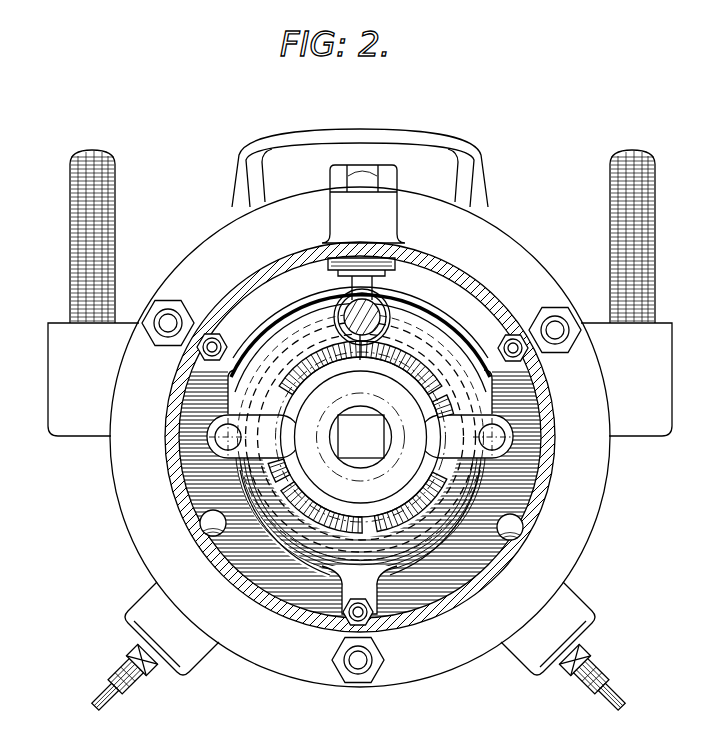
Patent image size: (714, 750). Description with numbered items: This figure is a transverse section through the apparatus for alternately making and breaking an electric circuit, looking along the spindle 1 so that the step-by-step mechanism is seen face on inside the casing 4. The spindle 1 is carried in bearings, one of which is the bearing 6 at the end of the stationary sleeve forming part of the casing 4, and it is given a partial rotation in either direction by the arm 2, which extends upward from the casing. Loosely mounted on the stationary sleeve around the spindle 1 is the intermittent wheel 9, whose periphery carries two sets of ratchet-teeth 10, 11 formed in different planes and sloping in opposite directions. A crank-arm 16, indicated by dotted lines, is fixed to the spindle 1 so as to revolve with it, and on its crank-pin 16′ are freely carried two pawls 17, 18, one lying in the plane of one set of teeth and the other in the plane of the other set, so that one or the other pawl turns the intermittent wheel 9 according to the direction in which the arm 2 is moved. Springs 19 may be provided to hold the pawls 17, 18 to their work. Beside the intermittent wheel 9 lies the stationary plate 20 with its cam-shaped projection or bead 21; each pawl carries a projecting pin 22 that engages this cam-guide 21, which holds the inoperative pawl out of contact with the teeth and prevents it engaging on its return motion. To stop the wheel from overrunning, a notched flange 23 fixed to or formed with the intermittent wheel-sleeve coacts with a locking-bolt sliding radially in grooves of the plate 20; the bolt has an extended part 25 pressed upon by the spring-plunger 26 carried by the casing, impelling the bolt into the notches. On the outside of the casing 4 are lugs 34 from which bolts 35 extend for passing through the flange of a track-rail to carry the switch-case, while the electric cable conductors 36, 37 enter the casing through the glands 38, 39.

The spindle 1 is at (366, 408).
The arm 2 is at (416, 150).
The casing 4 is at (503, 560).
The bearing 6 is at (537, 493).
The intermittent wheel 9 is at (267, 537).
The ratchet-teeth 10 is at (430, 387).
The ratchet-teeth 11 is at (393, 337).
The crank-arm 16 is at (331, 397).
The crank-pin 16′ is at (347, 310).
The pawl 17 is at (302, 358).
The pawl 18 is at (433, 353).
The spring 19 is at (307, 320).
The stationary plate 20 is at (235, 320).
The cam-shaped projection or bead 21 is at (262, 508).
The projecting pin 22 is at (226, 437).
The notched flange 23 is at (340, 537).
The extended part 25 is at (378, 285).
The spring-plunger 26 is at (371, 245).
The lugs 34 is at (88, 437).
The bolts 35 is at (72, 244).
The electric cable conductor 36 is at (107, 699).
The electric cable conductor 37 is at (608, 680).
The gland 38 is at (587, 628).
The gland 39 is at (182, 667).